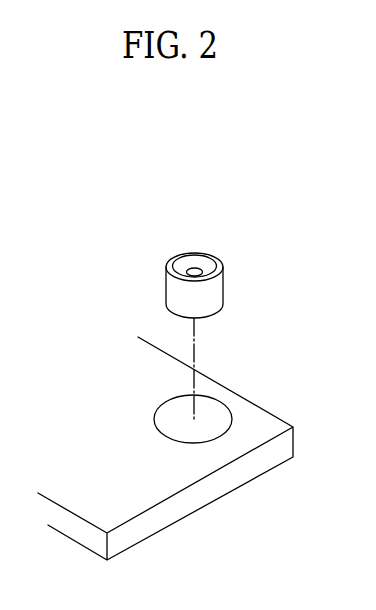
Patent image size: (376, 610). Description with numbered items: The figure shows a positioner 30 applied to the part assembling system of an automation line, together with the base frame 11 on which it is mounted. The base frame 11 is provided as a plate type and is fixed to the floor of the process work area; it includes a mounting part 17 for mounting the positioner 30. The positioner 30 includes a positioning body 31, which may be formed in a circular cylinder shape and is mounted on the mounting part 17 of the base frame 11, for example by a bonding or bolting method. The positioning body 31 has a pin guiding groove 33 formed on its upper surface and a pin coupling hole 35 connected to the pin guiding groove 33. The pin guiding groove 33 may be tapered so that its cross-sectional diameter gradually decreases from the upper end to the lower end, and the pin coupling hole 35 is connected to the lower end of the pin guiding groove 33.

The base frame 11 is at (230, 452).
The mounting part 17 is at (230, 406).
The positioner 30 is at (200, 256).
The positioning body 31 is at (172, 290).
The pin guiding groove 33 is at (180, 262).
The pin coupling hole 35 is at (197, 272).